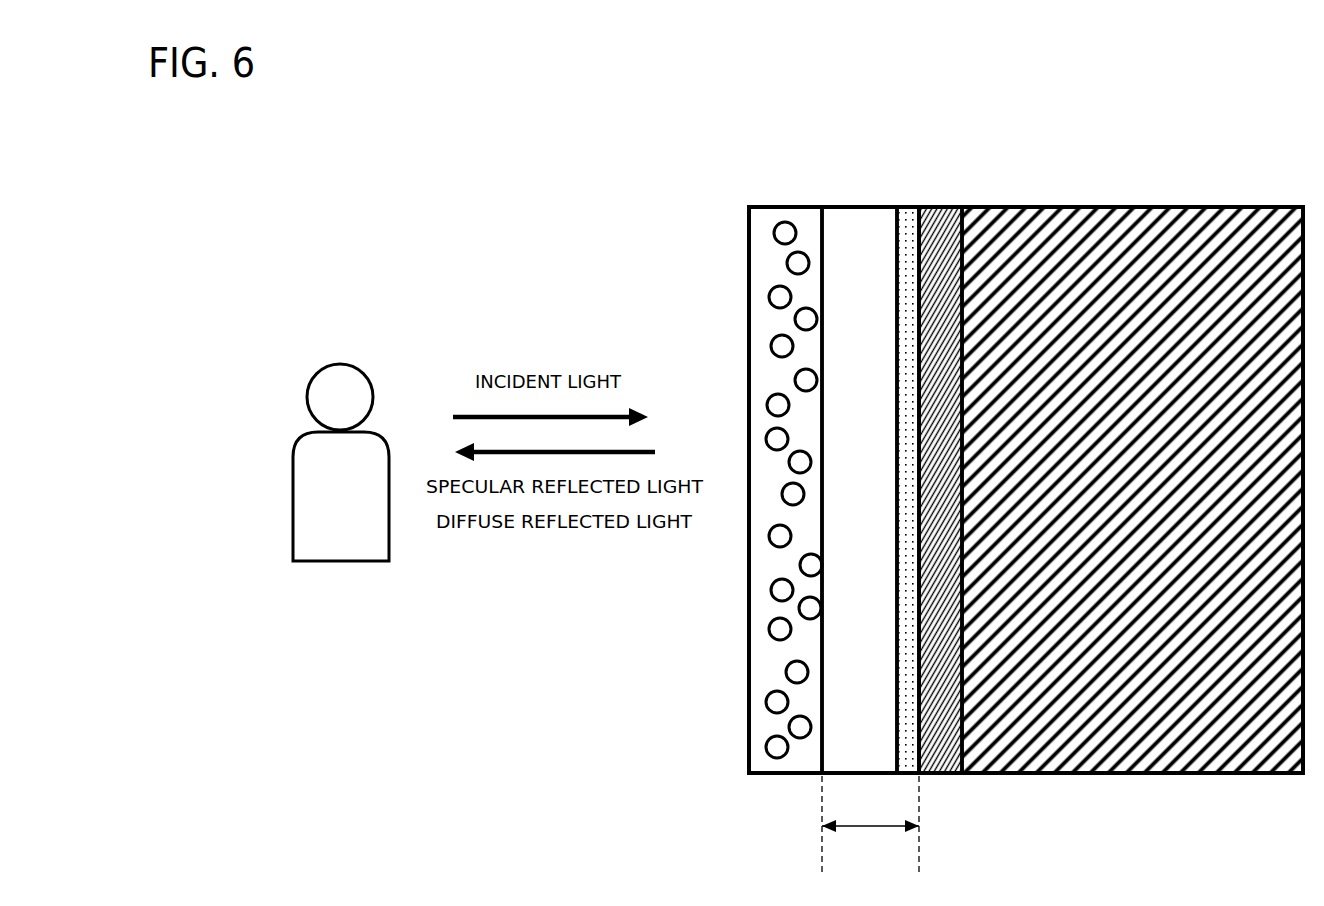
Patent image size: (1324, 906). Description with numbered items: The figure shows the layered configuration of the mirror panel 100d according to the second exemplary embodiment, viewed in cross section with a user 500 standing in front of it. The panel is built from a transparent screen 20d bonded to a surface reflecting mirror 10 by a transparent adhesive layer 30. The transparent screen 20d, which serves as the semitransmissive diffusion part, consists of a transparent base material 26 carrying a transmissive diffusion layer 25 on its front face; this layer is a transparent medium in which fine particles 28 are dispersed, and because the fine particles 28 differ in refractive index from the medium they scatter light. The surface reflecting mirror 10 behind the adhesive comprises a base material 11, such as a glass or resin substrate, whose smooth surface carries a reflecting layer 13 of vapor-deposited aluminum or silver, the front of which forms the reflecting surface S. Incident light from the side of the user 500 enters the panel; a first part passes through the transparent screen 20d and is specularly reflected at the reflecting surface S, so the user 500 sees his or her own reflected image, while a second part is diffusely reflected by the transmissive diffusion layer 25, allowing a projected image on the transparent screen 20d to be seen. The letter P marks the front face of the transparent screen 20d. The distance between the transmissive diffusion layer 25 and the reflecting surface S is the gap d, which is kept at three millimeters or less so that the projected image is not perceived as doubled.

The mirror panel 100d is at (1023, 792).
The surface reflecting mirror 10 is at (1303, 138).
The base material 11 is at (1138, 207).
The reflecting layer 13 is at (940, 207).
The transparent adhesive layer 30 is at (913, 207).
The transparent screen 20d is at (893, 137).
The transmissive diffusion layer 25 is at (772, 207).
The transparent base material 26 is at (841, 207).
The fine particles 28 is at (786, 672).
The reflecting surface S is at (918, 318).
The outer surface P is at (749, 364).
The user 500 is at (293, 480).
The gap d is at (870, 826).